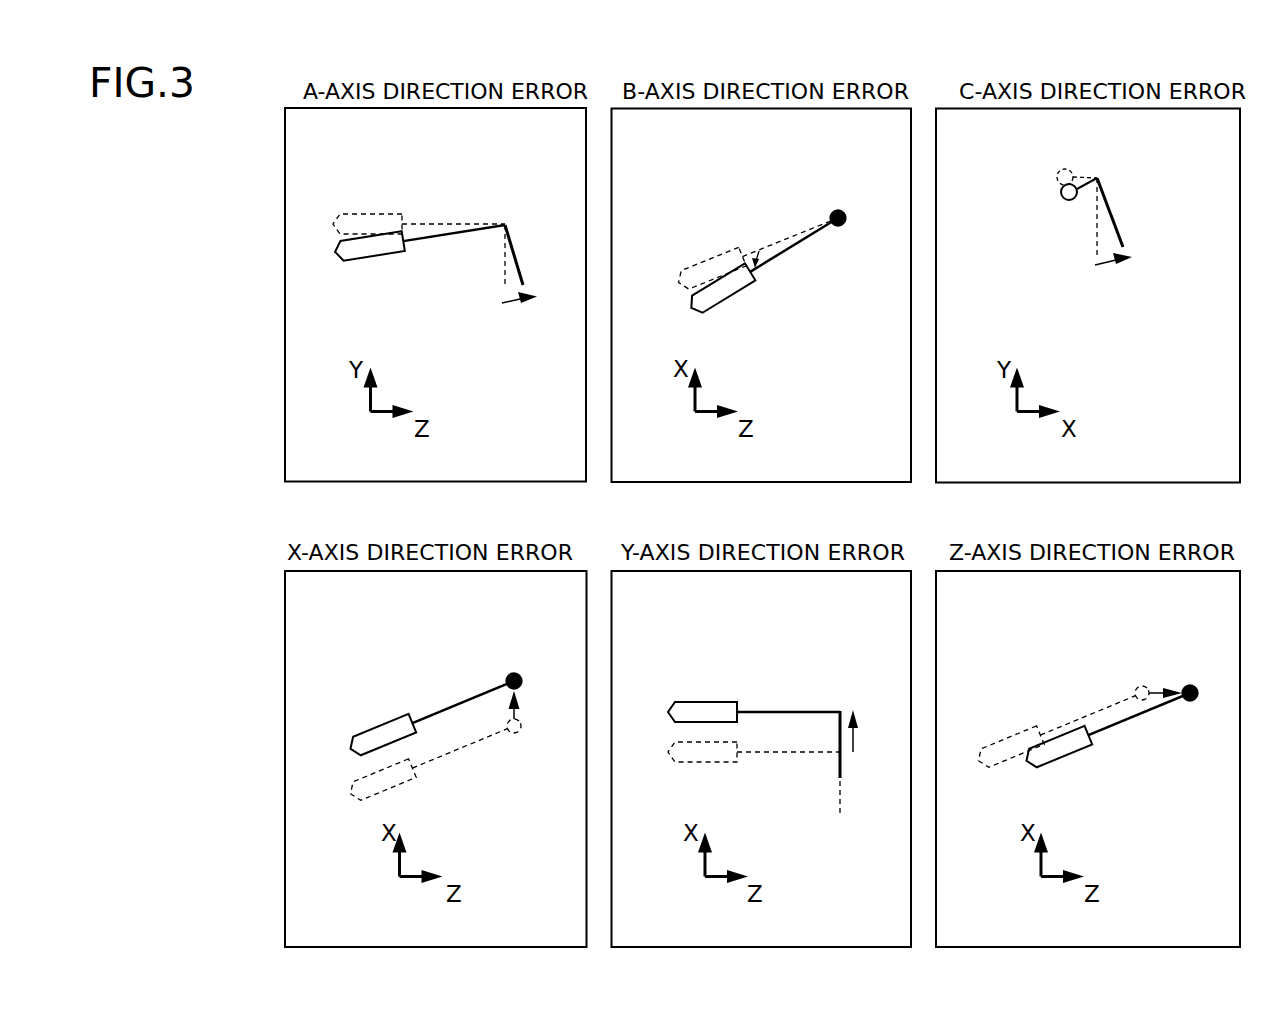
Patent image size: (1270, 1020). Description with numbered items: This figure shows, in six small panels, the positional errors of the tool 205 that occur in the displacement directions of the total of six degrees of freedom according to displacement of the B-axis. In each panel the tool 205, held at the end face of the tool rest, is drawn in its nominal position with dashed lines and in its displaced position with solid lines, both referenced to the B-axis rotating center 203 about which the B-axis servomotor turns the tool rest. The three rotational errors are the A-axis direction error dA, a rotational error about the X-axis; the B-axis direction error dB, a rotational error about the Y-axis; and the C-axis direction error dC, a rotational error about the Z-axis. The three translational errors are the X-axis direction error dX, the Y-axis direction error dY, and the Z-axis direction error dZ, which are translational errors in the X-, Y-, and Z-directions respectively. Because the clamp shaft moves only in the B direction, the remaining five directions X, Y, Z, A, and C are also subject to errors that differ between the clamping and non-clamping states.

The B-axis rotating center 203 is at (516, 252).
The tool 205 is at (377, 252).
The A-axis direction error dA is at (519, 312).
The B-axis direction error dB is at (771, 270).
The C-axis direction error dC is at (1113, 274).
The X-axis direction error dX is at (533, 705).
The Y-axis direction error dY is at (868, 731).
The Z-axis direction error dZ is at (1164, 680).